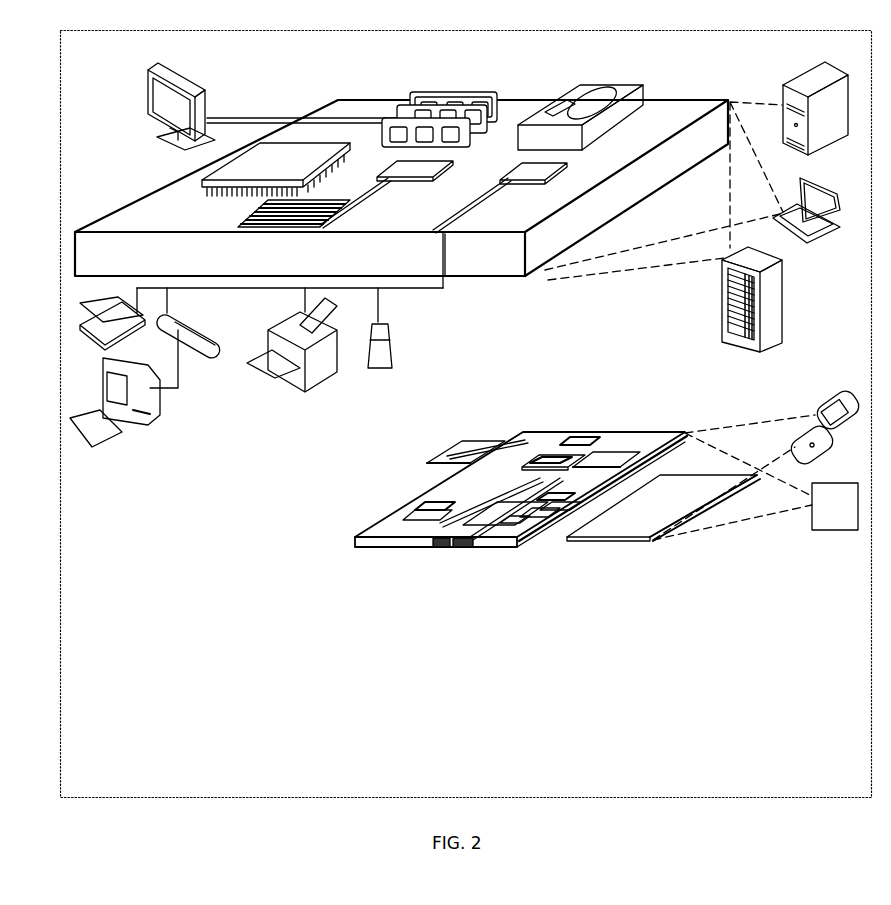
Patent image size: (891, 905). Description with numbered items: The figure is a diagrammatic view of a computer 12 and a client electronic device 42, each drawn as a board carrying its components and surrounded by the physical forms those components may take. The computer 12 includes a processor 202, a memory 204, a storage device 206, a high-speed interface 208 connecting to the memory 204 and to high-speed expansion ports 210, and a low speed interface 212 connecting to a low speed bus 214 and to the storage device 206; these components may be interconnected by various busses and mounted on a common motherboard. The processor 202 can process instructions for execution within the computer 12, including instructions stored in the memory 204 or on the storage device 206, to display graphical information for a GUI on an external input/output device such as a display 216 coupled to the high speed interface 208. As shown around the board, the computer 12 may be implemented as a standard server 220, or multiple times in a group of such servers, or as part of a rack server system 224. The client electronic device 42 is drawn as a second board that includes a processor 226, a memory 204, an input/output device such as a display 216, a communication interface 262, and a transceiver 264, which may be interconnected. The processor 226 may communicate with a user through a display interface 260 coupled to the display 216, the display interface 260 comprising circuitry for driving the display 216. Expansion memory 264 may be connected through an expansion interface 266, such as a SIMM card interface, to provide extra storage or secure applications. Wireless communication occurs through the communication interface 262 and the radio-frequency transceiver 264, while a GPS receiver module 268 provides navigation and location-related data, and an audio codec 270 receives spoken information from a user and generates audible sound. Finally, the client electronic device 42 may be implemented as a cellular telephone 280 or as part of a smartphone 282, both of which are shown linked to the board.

The computer 12 is at (286, 74).
The client electronic device 42 is at (499, 408).
The processor 202 is at (200, 180).
The memory 204 is at (420, 92).
The storage device 206 is at (573, 84).
The high-speed interface 208 is at (390, 147).
The high-speed expansion ports 210 is at (247, 211).
The low speed interface 212 is at (508, 170).
The low speed bus 214 is at (452, 233).
The display 216 is at (150, 70).
The standard server 220 is at (782, 88).
The rack server system 224 is at (722, 312).
The processor 226 is at (466, 545).
The display interface 260 is at (557, 527).
The communication interface 262 is at (547, 455).
The transceiver 264 is at (452, 441).
The expansion interface 266 is at (500, 440).
The GPS receiver module 268 is at (575, 440).
The audio codec 270 is at (553, 527).
The cellular telephone 280 is at (832, 398).
The smartphone 282 is at (818, 480).